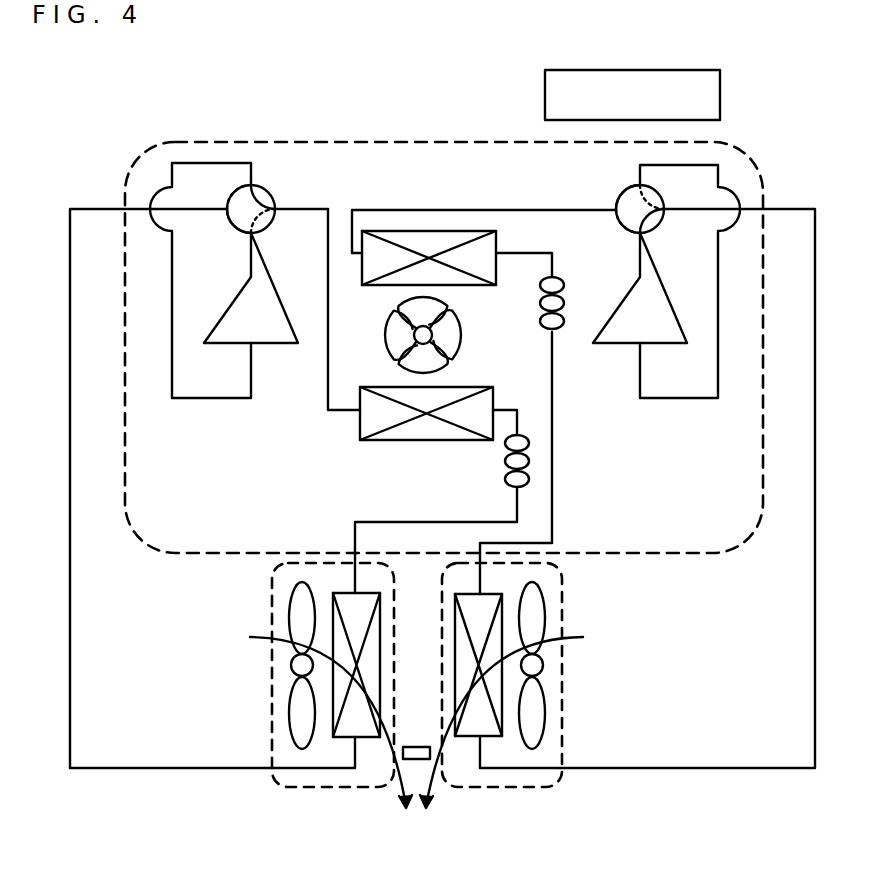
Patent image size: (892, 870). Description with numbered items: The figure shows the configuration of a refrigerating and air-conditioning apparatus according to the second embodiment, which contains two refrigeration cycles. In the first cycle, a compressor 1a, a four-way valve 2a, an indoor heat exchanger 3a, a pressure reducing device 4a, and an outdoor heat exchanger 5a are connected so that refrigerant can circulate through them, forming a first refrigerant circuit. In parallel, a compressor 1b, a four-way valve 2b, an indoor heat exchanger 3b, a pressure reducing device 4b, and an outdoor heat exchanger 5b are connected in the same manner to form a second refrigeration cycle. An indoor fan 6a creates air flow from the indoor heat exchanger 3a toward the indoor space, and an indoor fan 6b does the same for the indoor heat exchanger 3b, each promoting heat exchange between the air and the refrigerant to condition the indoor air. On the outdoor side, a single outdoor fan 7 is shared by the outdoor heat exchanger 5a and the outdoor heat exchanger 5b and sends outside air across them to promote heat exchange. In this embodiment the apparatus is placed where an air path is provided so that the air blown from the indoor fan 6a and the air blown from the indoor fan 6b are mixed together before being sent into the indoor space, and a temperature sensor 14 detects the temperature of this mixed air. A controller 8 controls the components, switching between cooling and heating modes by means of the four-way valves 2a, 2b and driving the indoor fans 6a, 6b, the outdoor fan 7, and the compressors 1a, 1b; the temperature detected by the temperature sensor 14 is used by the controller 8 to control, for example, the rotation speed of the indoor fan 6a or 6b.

The compressor 1a is at (237, 321).
The compressor 1b is at (640, 308).
The four-way valve 2a is at (266, 196).
The four-way valve 2b is at (619, 198).
The indoor heat exchanger 3a is at (340, 592).
The indoor heat exchanger 3b is at (480, 600).
The pressure reducing device 4a is at (505, 462).
The pressure reducing device 4b is at (563, 292).
The outdoor heat exchanger 5a is at (423, 420).
The outdoor heat exchanger 5b is at (427, 242).
The indoor fan 6a is at (290, 663).
The indoor fan 6b is at (530, 695).
The outdoor fan 7 is at (455, 322).
The controller 8 is at (705, 108).
The temperature sensor 14 is at (412, 747).